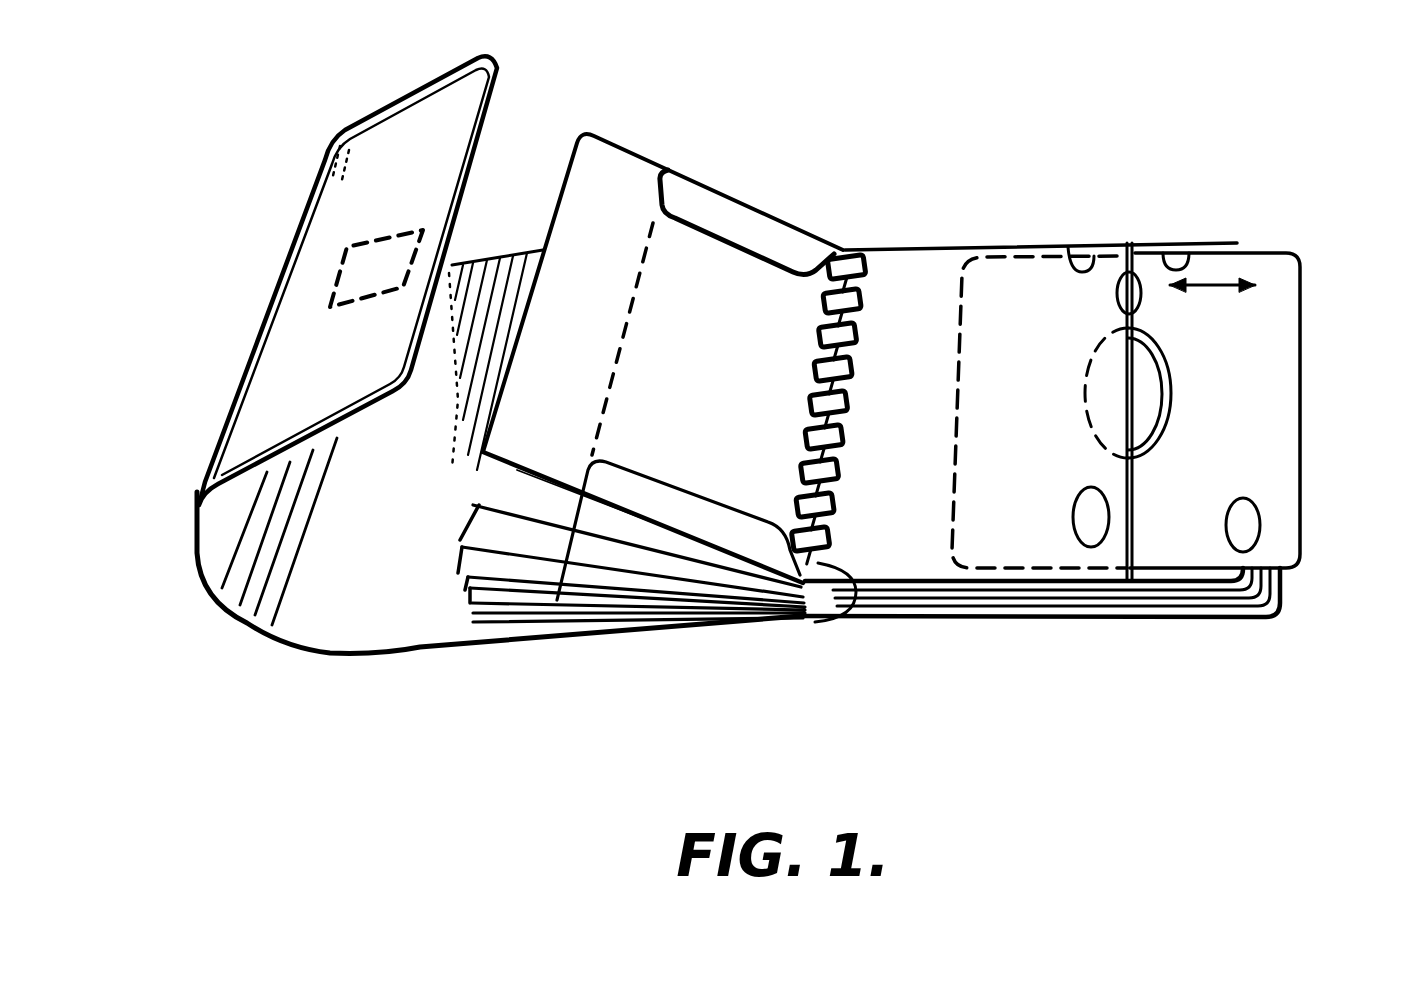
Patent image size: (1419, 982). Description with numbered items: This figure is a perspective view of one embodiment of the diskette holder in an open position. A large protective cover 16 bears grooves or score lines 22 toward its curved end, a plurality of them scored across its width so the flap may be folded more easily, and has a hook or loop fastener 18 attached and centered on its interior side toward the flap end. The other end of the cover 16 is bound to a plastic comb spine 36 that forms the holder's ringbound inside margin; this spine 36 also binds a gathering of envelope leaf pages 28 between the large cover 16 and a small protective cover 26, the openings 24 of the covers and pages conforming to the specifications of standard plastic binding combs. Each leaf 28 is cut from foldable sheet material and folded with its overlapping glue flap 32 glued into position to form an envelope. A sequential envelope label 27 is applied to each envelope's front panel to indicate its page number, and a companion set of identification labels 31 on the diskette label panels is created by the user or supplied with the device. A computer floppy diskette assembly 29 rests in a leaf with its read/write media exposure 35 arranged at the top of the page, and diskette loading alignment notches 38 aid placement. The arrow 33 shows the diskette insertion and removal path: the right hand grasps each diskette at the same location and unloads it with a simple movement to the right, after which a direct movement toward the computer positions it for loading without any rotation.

The large protective overlapping cover 16 is at (242, 368).
The hook or loop fastening strip 18 is at (343, 249).
The score lines or grooves 22 is at (214, 597).
The openings for engaging binder finger rings 24 is at (873, 261).
The small protective flat cover 26 is at (1140, 623).
The sequential envelope label 27 is at (1083, 552).
The gathering of leaf envelope pages 28 is at (628, 150).
The computer floppy diskette assembly 29 is at (1300, 407).
The identification label on diskette label panel 31 is at (1262, 508).
The overlapping glue flap 32 is at (723, 207).
The arrow showing diskette insertion/removal paths 33 is at (1213, 288).
The diskette read/write media exposure 35 is at (1150, 243).
The plastic comb binding device 36 is at (813, 625).
The diskette loading alignment notches 38 is at (1082, 243).